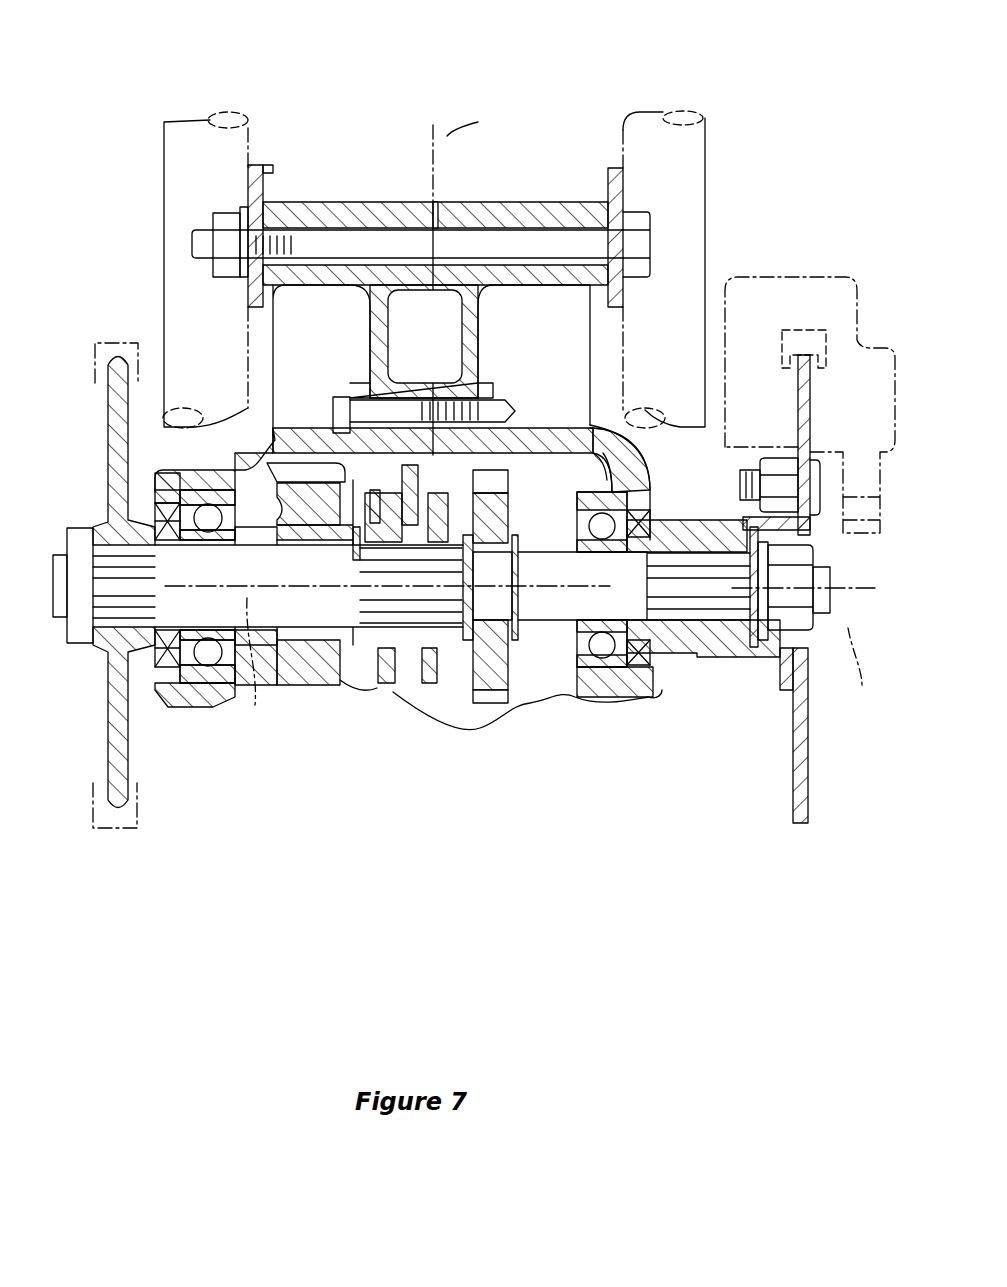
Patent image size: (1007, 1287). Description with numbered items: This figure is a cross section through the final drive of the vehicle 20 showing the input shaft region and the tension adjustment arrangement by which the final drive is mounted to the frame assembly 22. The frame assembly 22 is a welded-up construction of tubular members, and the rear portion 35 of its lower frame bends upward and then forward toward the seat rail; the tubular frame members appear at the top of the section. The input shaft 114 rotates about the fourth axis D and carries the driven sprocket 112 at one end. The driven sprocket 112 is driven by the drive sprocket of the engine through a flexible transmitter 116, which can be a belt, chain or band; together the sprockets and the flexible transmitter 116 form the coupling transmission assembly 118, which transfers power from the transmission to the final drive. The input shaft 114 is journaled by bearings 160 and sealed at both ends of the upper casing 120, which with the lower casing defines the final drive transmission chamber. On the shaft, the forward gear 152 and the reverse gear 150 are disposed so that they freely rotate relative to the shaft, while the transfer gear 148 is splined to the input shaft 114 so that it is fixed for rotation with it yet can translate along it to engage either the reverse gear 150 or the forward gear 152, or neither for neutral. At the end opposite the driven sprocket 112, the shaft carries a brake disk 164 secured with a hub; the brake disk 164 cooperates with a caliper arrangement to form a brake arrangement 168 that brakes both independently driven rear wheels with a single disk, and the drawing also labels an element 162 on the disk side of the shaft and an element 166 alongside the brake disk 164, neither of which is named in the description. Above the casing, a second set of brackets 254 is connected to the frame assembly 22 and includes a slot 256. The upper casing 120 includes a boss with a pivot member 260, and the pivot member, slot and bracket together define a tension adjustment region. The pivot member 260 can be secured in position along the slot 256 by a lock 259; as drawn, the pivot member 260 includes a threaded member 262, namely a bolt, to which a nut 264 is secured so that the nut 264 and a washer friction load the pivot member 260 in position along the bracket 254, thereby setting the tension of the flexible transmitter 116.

The vehicle 20 is at (311, 846).
The frame assembly 22 is at (705, 135).
The rear portion of the lower frame 35 is at (200, 135).
The driven sprocket 112 is at (128, 747).
The input shaft 114 is at (547, 607).
The flexible transmitter 116 is at (95, 822).
The coupling transmission assembly 118 is at (187, 942).
The upper casing 120 is at (618, 695).
The transfer gear 148 is at (377, 493).
The reverse gear 150 is at (493, 698).
The forward gear 152 is at (318, 675).
The bearings 160 is at (620, 510).
The nut 162 is at (653, 520).
The brake disk 164 is at (800, 356).
The frame member 166 is at (880, 300).
The brake arrangement 168 is at (882, 200).
The brackets 254 is at (250, 210).
The slot 256 is at (258, 245).
The lock 259 is at (550, 216).
The pivot member 260 is at (421, 242).
The threaded member 262 is at (282, 245).
The nut 264 is at (237, 277).